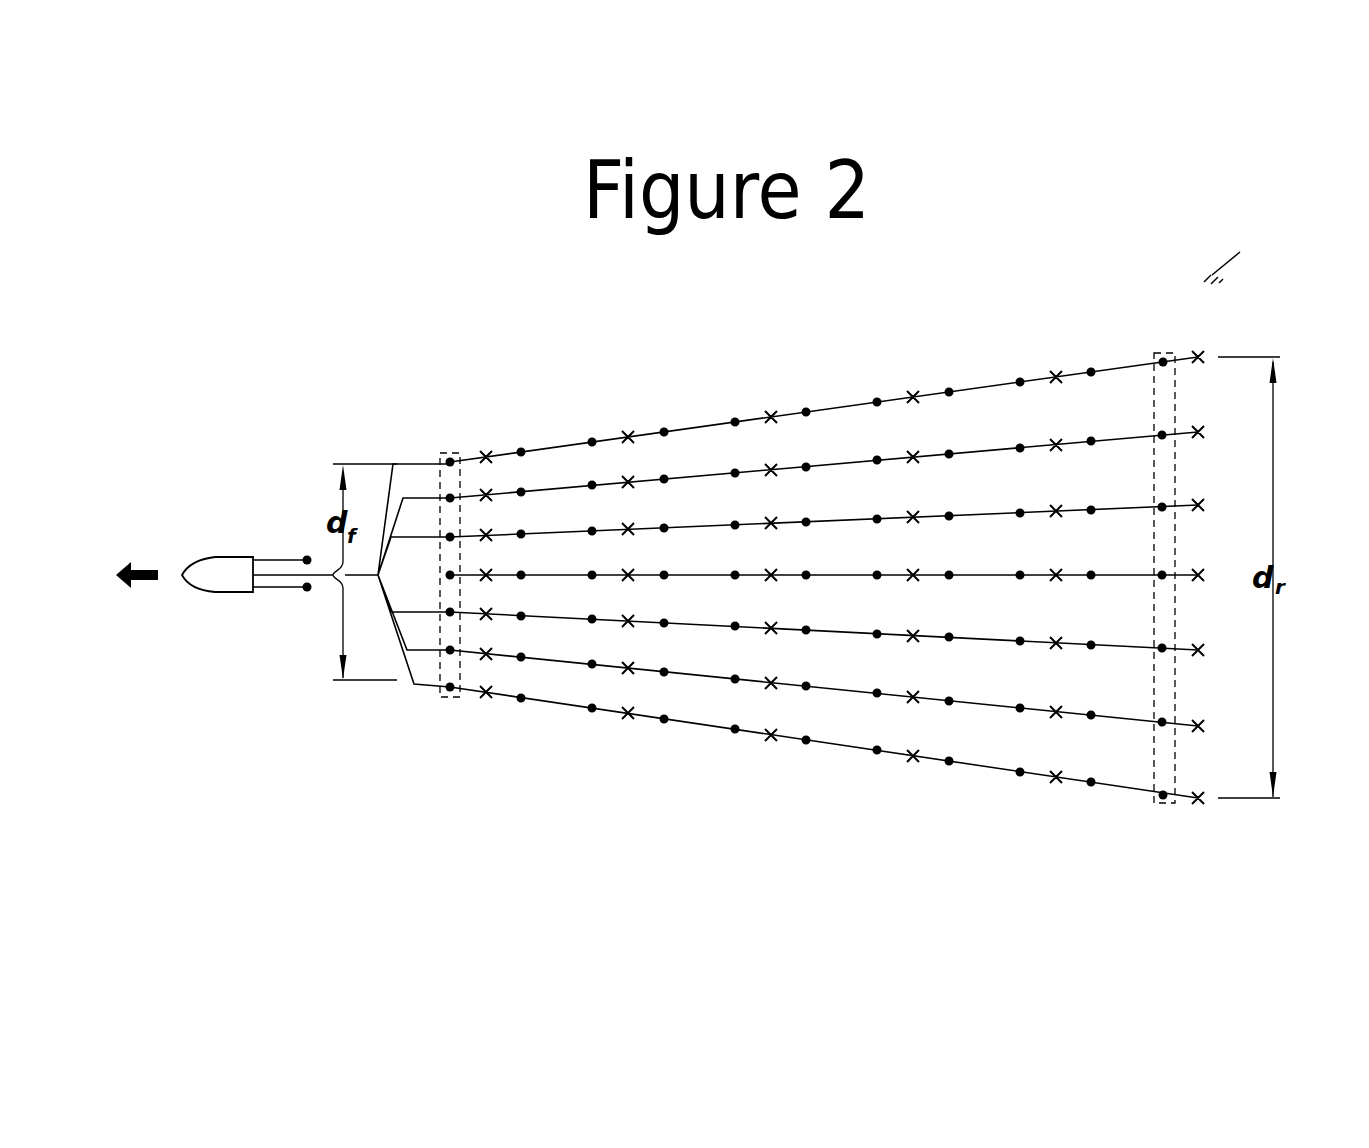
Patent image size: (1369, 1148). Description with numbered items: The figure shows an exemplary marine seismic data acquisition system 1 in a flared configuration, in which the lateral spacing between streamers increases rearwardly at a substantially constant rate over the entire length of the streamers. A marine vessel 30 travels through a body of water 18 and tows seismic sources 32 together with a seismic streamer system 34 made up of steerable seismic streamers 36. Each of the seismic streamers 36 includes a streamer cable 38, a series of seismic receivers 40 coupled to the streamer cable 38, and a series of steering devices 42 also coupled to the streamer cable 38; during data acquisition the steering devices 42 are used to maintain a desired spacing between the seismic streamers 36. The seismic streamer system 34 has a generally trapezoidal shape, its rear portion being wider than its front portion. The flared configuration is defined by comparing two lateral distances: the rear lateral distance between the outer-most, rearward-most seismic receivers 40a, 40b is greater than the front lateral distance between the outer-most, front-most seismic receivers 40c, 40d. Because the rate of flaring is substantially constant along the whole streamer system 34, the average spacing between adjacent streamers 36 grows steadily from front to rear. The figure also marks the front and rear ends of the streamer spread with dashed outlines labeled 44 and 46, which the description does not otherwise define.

The marine seismic data acquisition system 1 is at (1240, 260).
The body of water 18 is at (184, 645).
The marine vessel 30 is at (212, 556).
The seismic sources 32 is at (307, 559).
The seismic streamer system 34 is at (557, 385).
The steerable seismic streamers 36 is at (405, 515).
The streamer cable 38 is at (575, 532).
The seismic receivers 40 is at (664, 528).
The outer-most, rearward-most seismic receiver 40a is at (1165, 352).
The outer-most, rearward-most seismic receiver 40b is at (1160, 802).
The outer-most, front-most seismic receiver 40c is at (450, 452).
The outer-most, front-most seismic receiver 40d is at (455, 697).
The steering devices 42 is at (771, 524).
The front end of spread 44 is at (440, 683).
The rear end of spread 46 is at (1154, 778).